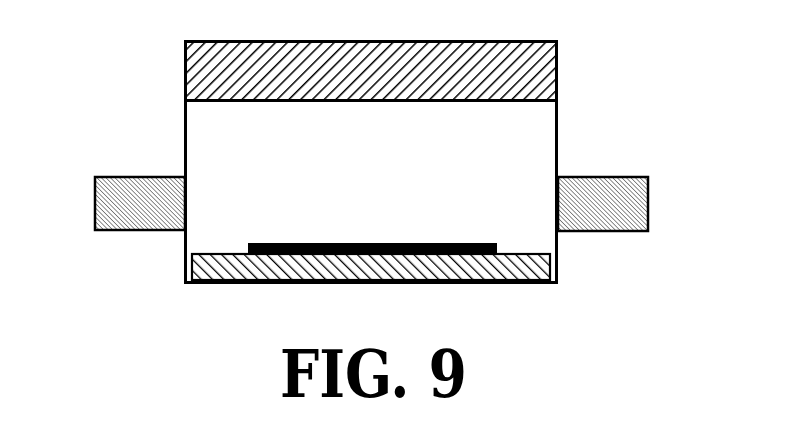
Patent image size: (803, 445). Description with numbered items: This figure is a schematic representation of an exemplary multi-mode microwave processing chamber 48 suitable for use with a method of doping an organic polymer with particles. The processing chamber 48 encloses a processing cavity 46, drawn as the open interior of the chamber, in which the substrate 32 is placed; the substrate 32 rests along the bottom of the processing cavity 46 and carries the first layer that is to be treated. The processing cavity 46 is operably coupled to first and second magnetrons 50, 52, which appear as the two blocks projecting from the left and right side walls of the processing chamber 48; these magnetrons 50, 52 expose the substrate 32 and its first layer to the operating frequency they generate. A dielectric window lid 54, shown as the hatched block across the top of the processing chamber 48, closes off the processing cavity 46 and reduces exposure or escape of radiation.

The processing chamber 48 is at (158, 57).
The dielectric window lid 54 is at (525, 40).
The processing cavity 46 is at (376, 184).
The substrate 32 is at (328, 243).
The first magnetron 50 is at (146, 177).
The second magnetron 52 is at (592, 177).